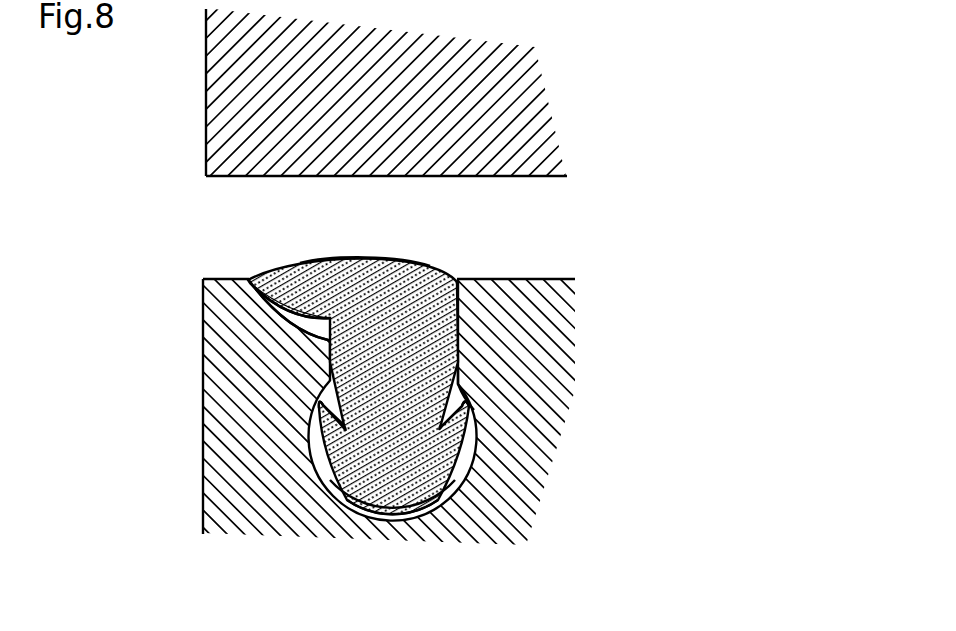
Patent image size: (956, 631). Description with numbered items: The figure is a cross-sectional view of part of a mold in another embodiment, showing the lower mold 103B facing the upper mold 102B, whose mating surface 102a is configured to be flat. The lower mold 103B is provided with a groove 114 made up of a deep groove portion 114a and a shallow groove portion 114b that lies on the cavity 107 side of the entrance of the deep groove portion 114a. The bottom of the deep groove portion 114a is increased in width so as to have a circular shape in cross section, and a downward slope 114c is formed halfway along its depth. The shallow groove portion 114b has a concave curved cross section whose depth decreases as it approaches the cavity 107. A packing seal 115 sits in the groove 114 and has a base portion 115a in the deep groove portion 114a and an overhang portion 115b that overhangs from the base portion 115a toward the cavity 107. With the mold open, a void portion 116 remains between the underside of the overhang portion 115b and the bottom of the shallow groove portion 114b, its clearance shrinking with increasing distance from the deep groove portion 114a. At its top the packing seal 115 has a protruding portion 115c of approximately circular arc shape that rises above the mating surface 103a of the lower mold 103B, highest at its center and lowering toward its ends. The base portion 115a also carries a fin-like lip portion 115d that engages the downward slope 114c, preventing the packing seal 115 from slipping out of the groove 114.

The upper mold 102B is at (542, 88).
The mating surface 102a is at (542, 177).
The lower mold 103B is at (553, 386).
The mating surface 103a is at (558, 278).
The cavity 107 is at (170, 242).
The groove 114 is at (482, 458).
The deep groove portion 114a is at (314, 474).
The shallow groove portion 114b is at (282, 320).
The downward slope 114c is at (466, 400).
The packing seal 115 is at (418, 253).
The base portion 115a is at (405, 508).
The overhang portion 115b is at (287, 267).
The protruding portion 115c is at (368, 257).
The lip portion 115d is at (475, 405).
The void portion 116 is at (282, 322).